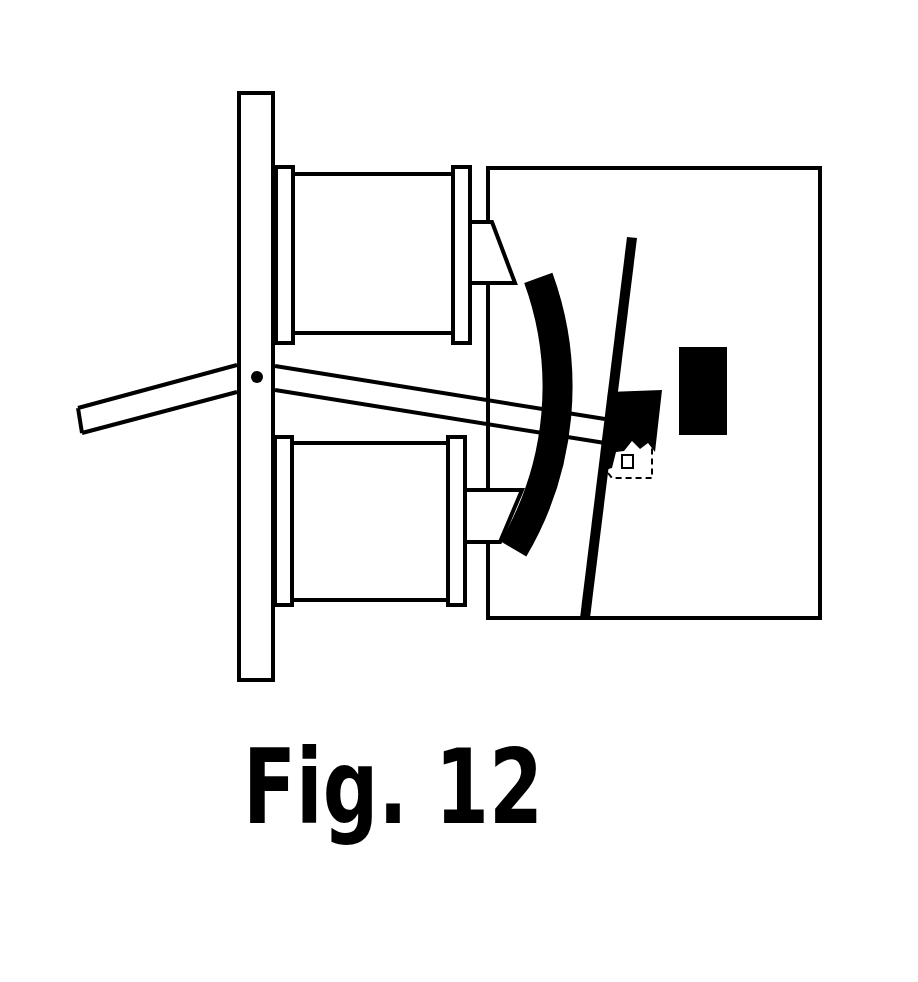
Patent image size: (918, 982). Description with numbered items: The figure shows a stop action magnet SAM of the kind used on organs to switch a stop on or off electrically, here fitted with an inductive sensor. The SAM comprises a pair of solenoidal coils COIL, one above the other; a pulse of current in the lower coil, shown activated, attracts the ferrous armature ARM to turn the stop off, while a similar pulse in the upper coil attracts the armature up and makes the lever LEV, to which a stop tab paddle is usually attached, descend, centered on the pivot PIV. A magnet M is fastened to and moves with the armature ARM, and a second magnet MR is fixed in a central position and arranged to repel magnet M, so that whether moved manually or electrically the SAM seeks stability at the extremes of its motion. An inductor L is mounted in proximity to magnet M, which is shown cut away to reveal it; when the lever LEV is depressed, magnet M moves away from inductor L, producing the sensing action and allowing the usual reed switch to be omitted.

The stop action magnet SAM is at (263, 117).
The solenoidal coil COIL is at (363, 503).
The armature ARM is at (623, 240).
The magnet M is at (647, 390).
The second magnet MR is at (716, 436).
The inductor L is at (629, 470).
The pivot PIV is at (254, 372).
The lever LEV is at (140, 412).